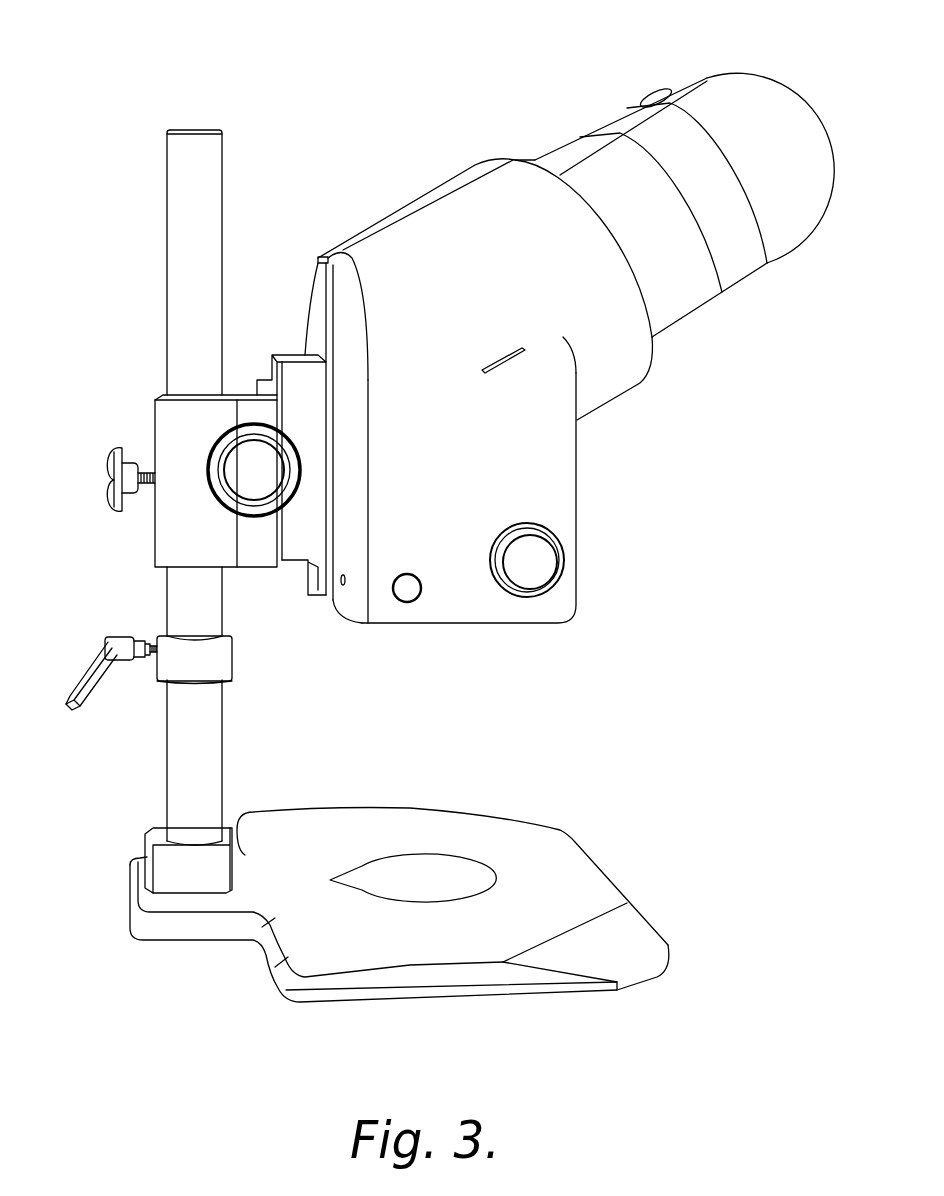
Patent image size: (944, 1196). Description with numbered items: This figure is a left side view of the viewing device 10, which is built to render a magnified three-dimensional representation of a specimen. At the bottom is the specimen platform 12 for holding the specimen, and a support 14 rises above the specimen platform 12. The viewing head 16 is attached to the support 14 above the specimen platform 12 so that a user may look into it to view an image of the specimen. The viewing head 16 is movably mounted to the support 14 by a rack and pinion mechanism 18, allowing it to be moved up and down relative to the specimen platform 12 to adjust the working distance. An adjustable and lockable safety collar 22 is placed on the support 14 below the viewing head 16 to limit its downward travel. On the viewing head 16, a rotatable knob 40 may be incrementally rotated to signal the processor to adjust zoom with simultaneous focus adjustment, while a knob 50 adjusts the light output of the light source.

The viewing device 10 is at (427, 79).
The specimen platform 12 is at (570, 880).
The support 14 is at (173, 212).
The viewing head 16 is at (400, 191).
The rack and pinion mechanism 18 is at (170, 418).
The safety collar 22 is at (222, 667).
The rotatable knob 40 is at (547, 568).
The knob 50 is at (472, 615).